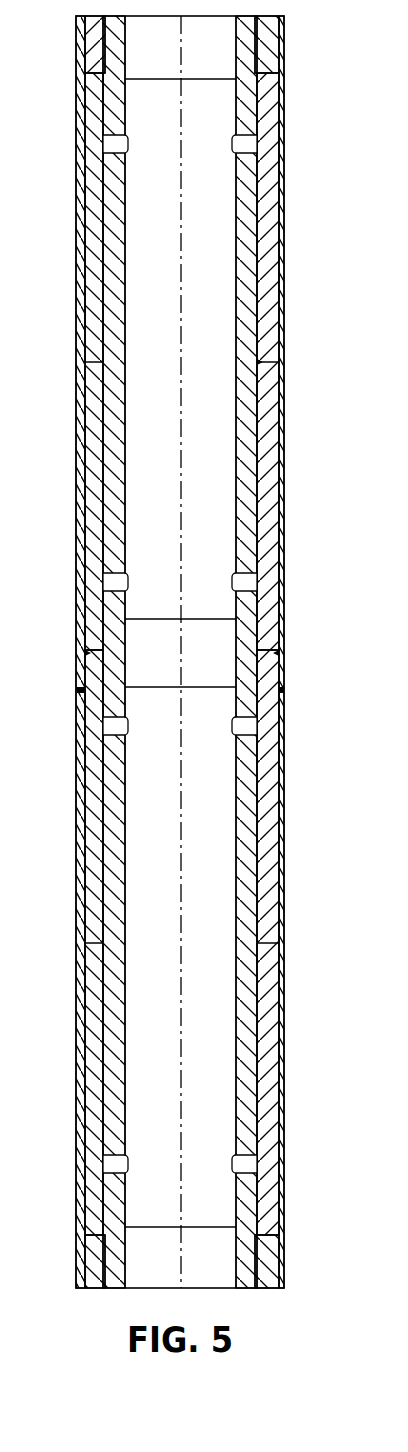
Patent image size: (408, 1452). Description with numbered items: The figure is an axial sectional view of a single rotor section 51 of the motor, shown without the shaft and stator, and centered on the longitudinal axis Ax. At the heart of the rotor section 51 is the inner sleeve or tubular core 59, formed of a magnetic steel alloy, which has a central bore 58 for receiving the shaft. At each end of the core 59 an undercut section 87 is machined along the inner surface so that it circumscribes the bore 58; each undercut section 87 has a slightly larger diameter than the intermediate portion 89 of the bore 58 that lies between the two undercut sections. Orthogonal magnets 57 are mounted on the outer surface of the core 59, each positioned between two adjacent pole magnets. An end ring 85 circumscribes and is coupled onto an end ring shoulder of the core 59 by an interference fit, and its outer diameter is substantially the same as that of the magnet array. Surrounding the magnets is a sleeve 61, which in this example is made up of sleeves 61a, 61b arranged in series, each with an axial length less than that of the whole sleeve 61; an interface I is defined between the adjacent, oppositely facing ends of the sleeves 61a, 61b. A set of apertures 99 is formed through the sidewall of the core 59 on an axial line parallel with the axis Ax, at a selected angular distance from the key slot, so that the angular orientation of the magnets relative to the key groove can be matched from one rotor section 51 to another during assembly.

The rotor section 51 is at (296, 402).
The orthogonal magnet 57 is at (270, 606).
The bore 58 is at (224, 1049).
The core 59 is at (108, 243).
The sleeve 61 is at (232, 652).
The sleeve 61a is at (284, 551).
The sleeve 61b is at (283, 787).
The end ring 85 is at (272, 1270).
The undercut section 87 is at (207, 1254).
The intermediate portion 89 is at (234, 475).
The aperture 99 is at (248, 727).
The axis Ax is at (182, 309).
The interface I is at (288, 693).